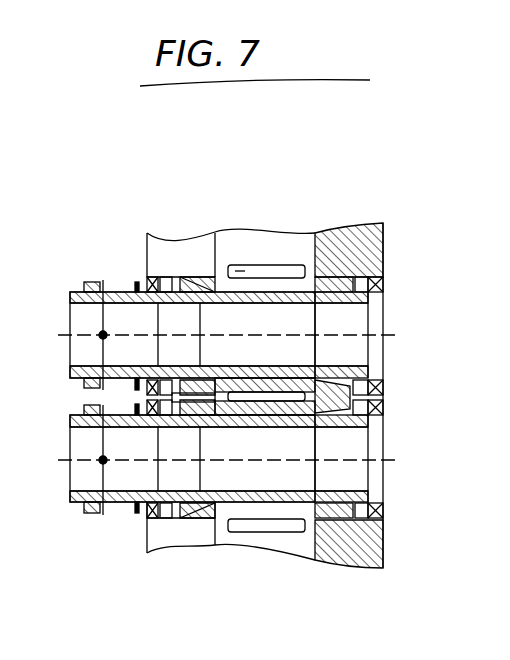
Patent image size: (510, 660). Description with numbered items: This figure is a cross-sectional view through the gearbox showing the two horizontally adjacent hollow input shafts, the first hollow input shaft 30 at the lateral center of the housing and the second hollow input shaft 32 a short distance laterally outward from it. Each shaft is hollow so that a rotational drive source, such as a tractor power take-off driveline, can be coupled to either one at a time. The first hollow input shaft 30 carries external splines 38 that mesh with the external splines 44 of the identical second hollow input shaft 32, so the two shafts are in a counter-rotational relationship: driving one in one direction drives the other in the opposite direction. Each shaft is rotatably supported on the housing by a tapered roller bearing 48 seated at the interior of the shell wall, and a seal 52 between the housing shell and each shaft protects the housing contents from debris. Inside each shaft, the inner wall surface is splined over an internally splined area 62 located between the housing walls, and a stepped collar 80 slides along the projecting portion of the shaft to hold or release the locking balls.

The first hollow input shaft 30 is at (233, 272).
The second hollow input shaft 32 is at (308, 516).
The external splines 38 is at (266, 262).
The external splines 44 is at (262, 533).
The tapered roller bearing 48 is at (183, 277).
The seal 52 is at (386, 289).
The internally splined area 62 is at (288, 362).
The stepped collar 80 is at (93, 280).